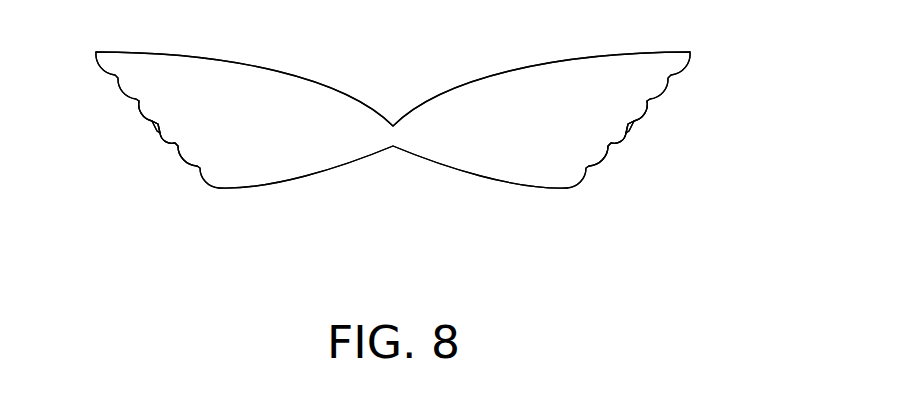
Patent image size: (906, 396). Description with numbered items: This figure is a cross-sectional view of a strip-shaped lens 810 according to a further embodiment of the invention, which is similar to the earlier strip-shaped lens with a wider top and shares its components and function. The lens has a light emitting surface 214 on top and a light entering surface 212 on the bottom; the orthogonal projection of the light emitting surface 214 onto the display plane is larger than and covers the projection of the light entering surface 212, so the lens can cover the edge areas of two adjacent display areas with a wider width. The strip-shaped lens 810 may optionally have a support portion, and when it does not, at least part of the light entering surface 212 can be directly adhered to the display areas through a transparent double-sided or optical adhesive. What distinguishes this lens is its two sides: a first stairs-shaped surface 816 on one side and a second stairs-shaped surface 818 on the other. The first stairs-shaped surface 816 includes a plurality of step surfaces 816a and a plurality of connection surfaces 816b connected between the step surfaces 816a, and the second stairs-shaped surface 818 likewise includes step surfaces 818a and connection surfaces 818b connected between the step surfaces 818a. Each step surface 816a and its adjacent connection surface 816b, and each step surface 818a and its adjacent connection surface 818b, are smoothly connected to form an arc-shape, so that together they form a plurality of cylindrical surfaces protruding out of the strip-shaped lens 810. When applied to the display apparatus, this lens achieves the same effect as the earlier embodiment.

The strip-shaped lens 810 is at (734, 110).
The light emitting surface 214 is at (437, 92).
The light entering surface 212 is at (450, 168).
The first stairs-shaped surface 816 is at (58, 124).
The step surfaces 816a is at (171, 143).
The connection surfaces 816b is at (137, 104).
The second stairs-shaped surface 818 is at (728, 124).
The step surfaces 818a is at (656, 161).
The connection surfaces 818b is at (674, 129).